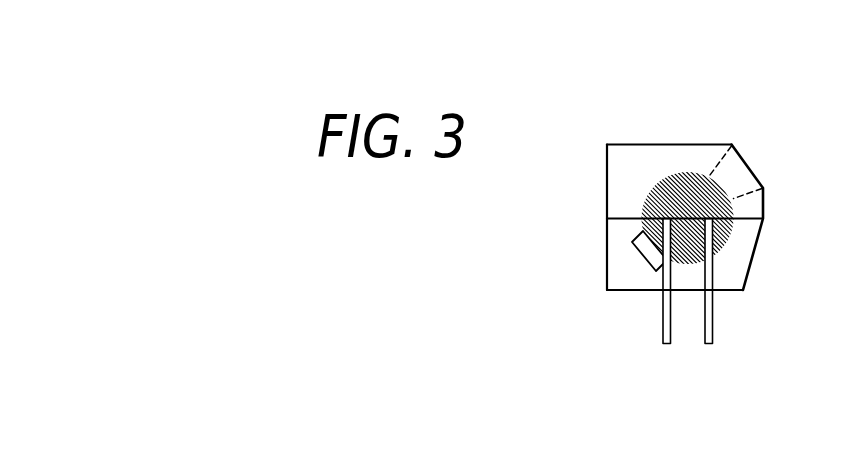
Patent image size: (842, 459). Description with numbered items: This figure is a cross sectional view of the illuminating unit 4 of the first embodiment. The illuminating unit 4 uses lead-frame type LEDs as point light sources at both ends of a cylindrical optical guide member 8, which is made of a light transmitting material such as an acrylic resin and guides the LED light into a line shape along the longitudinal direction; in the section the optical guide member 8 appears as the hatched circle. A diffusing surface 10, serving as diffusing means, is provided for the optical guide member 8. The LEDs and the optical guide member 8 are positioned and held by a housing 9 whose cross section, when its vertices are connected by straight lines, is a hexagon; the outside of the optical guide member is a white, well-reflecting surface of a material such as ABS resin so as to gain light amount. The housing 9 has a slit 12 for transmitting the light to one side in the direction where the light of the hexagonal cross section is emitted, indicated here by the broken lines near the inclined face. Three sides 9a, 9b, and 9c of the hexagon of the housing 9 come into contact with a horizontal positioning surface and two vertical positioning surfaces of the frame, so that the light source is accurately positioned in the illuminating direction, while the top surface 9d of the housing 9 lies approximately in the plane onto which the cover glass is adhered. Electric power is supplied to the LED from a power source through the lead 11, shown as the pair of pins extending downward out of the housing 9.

The illuminating unit 4 is at (710, 102).
The optical guide member 8 is at (688, 181).
The housing 9 is at (630, 157).
The side of the hexagon of the housing 9a is at (726, 292).
The side of the hexagon of the housing 9b is at (607, 185).
The side of the hexagon of the housing 9c is at (765, 203).
The top surface of the housing 9d is at (666, 144).
The diffusing surface 10 is at (643, 255).
The lead 11 is at (668, 347).
The slit 12 is at (735, 172).